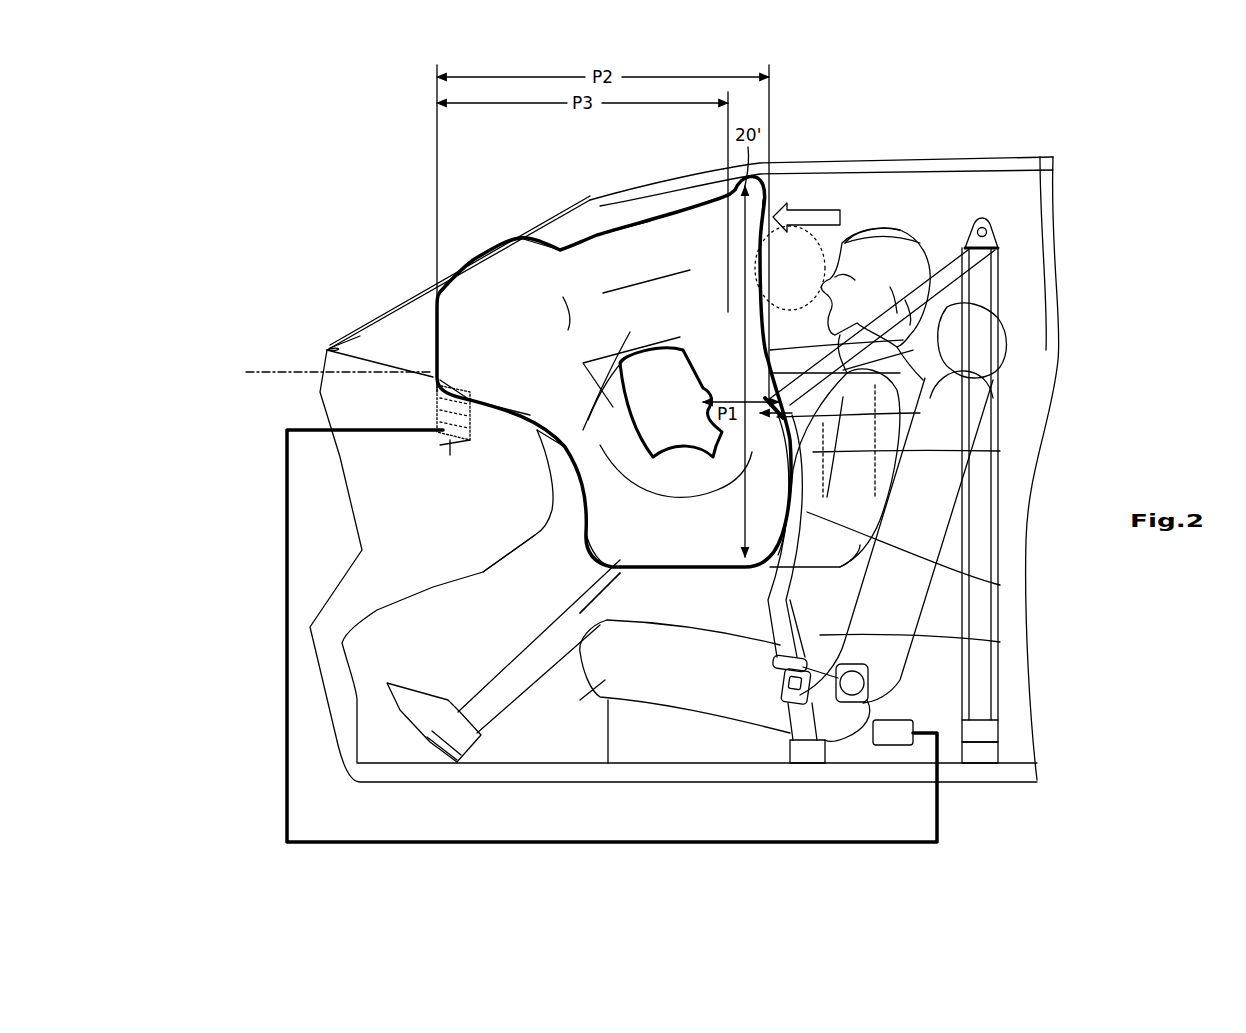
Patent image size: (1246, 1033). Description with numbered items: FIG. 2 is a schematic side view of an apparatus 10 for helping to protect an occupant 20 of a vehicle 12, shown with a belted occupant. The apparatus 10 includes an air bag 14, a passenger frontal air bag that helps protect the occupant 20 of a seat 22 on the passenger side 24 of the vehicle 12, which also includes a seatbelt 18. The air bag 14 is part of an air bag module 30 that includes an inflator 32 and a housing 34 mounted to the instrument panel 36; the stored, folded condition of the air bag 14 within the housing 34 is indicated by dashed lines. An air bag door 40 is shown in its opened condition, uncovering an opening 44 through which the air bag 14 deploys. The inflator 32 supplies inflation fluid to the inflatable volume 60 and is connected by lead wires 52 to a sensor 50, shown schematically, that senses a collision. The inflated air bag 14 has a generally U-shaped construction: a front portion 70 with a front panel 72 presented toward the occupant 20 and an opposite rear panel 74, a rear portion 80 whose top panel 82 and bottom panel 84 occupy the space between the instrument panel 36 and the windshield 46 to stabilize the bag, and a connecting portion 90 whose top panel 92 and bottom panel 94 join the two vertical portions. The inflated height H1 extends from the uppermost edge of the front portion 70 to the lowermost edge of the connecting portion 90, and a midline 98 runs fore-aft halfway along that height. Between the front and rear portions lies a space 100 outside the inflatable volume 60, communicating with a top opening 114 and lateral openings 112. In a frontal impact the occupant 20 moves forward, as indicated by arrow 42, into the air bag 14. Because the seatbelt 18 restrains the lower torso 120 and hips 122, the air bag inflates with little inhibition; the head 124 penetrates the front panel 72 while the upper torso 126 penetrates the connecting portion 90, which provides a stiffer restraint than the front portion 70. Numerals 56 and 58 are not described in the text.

The apparatus 10 is at (358, 293).
The vehicle 12 is at (362, 242).
The air bag 14 is at (477, 260).
The seatbelt 18 is at (785, 613).
The occupant 20 is at (963, 248).
The seat 22 is at (927, 468).
The passenger side 24 is at (698, 232).
The air bag module 30 is at (425, 405).
The inflator 32 is at (443, 446).
The housing 34 is at (451, 455).
The instrument panel 36 is at (497, 528).
The air bag door 40 is at (433, 350).
The arrow 42 is at (806, 207).
The opening 44 is at (474, 393).
The windshield 46 is at (563, 211).
The sensor 50 is at (890, 745).
The lead wires 52 is at (403, 842).
The vehicle body 56 is at (350, 329).
The rear panel 58 is at (768, 195).
The inflatable volume 60 is at (520, 312).
The front portion 70 is at (920, 413).
The front panel 72 is at (903, 340).
The rear panel 74 is at (842, 243).
The rear portion 80 is at (509, 377).
The top panel 82 is at (468, 293).
The bottom panel 84 is at (537, 430).
The connecting portion 90 is at (665, 560).
The top panel 92 is at (620, 573).
The bottom panel 94 is at (605, 680).
The midline 98 is at (278, 362).
The space 100 is at (657, 400).
The lateral openings 112 is at (660, 430).
The top opening 114 is at (624, 231).
The lower torso 120 is at (1000, 585).
The hips 122 is at (1000, 642).
The head 124 is at (700, 370).
The upper torso 126 is at (1000, 451).
The height H1 is at (765, 232).